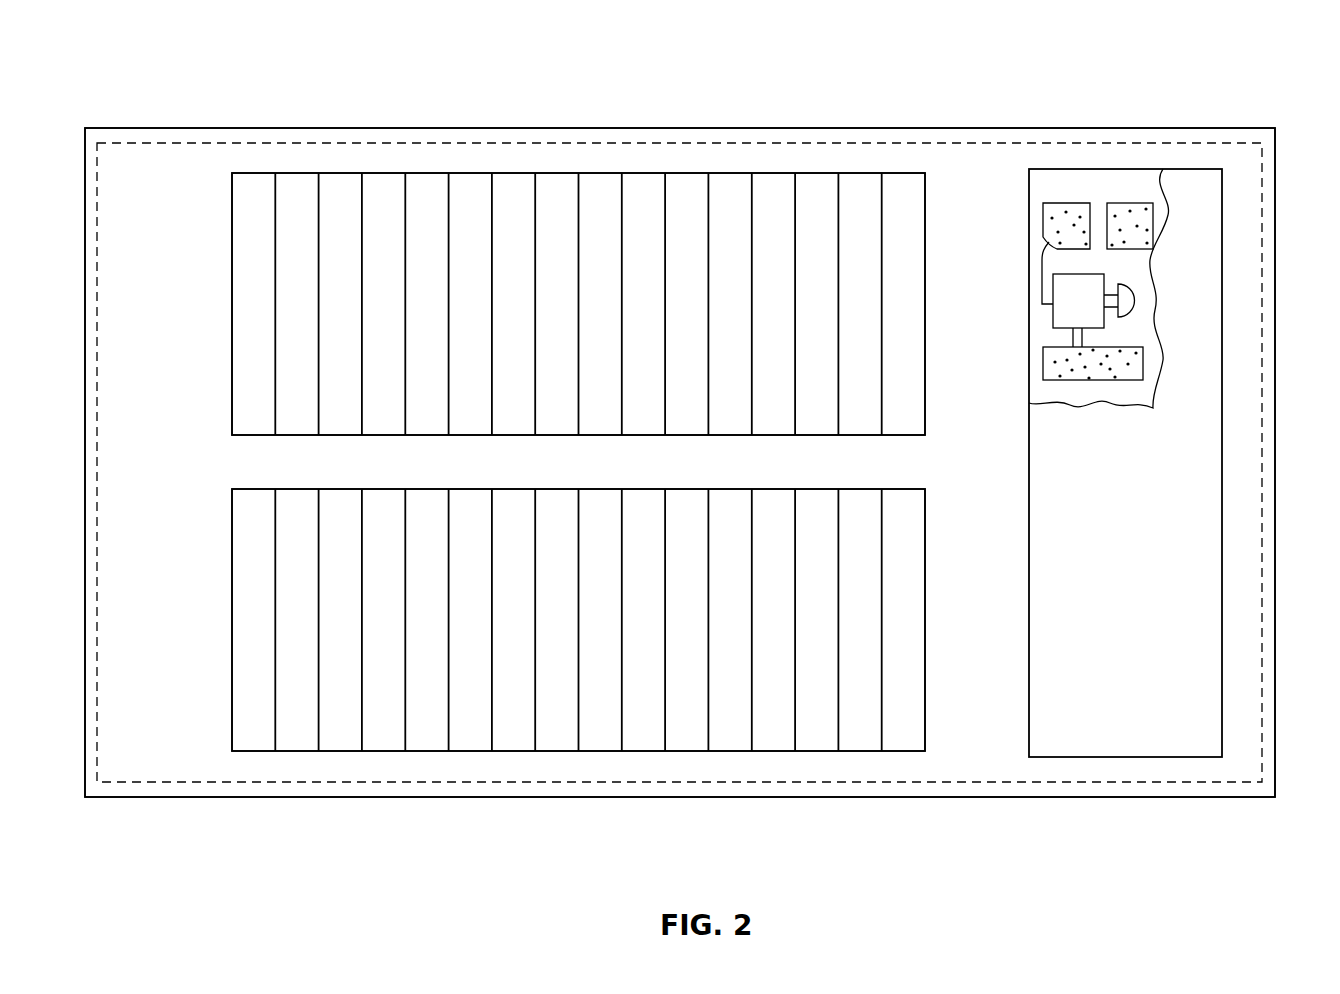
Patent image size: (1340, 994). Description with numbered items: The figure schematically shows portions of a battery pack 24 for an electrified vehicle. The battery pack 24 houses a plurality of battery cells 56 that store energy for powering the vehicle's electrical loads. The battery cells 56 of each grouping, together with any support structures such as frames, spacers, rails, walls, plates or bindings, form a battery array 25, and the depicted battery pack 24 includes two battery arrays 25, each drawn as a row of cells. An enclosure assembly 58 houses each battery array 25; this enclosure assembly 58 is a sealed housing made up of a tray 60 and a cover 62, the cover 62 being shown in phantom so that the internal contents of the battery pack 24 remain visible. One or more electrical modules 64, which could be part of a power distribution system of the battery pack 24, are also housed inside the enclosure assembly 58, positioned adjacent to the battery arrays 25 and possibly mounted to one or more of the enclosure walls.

The battery pack 24 is at (140, 48).
The battery array 25 is at (226, 283).
The battery cells 56 is at (342, 190).
The enclosure assembly 58 is at (930, 126).
The tray 60 is at (115, 797).
The cover 62 is at (240, 782).
The electrical module 64 is at (1190, 505).